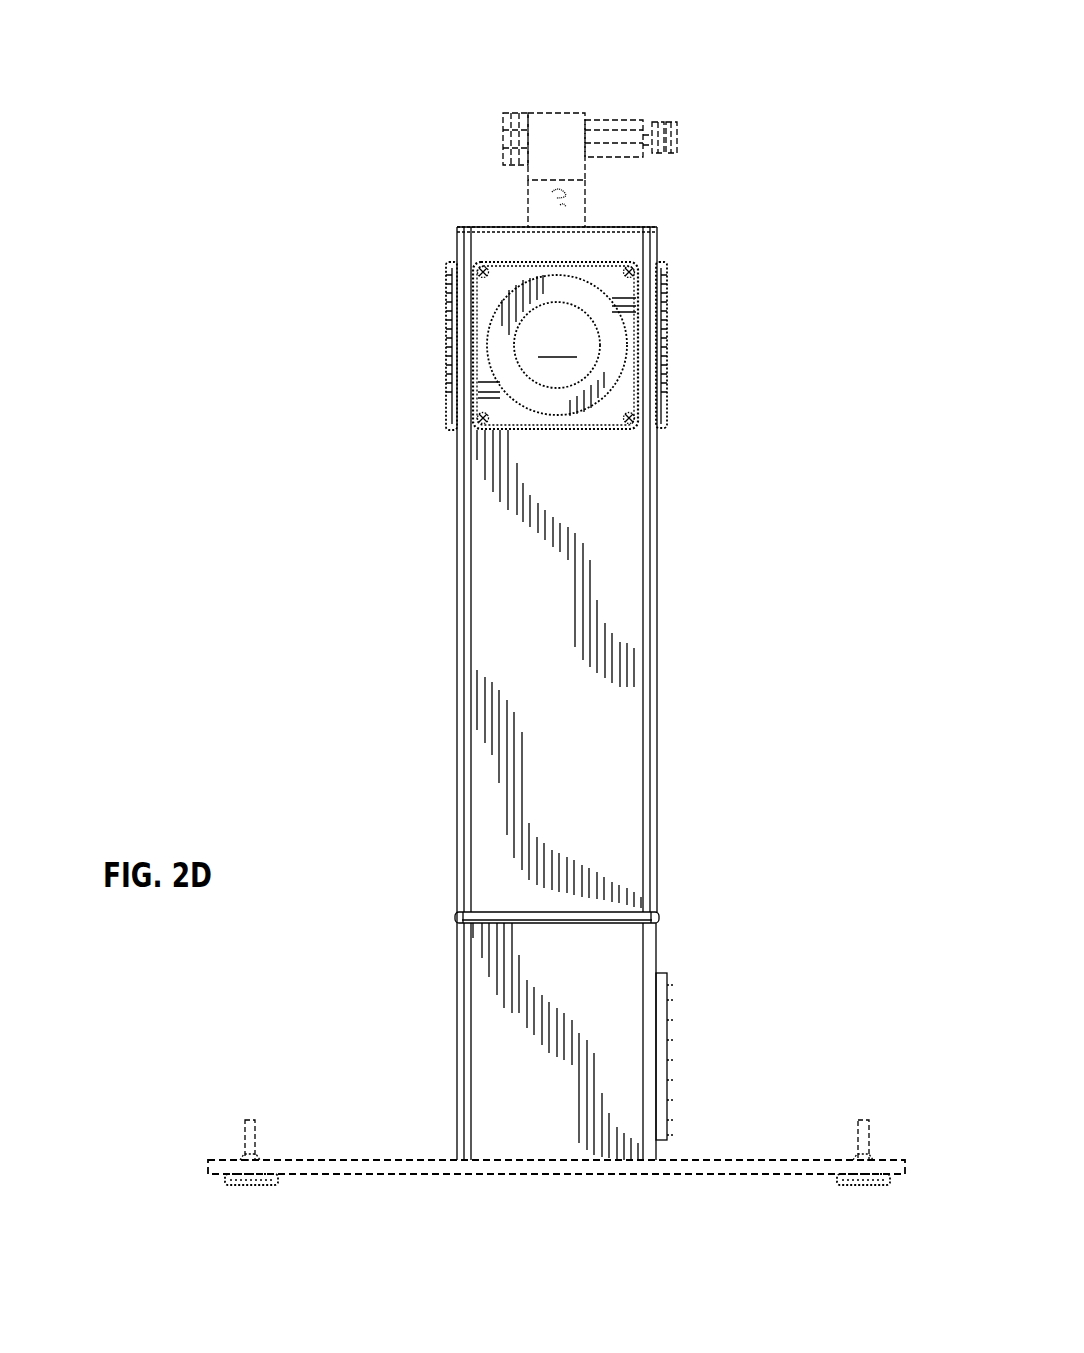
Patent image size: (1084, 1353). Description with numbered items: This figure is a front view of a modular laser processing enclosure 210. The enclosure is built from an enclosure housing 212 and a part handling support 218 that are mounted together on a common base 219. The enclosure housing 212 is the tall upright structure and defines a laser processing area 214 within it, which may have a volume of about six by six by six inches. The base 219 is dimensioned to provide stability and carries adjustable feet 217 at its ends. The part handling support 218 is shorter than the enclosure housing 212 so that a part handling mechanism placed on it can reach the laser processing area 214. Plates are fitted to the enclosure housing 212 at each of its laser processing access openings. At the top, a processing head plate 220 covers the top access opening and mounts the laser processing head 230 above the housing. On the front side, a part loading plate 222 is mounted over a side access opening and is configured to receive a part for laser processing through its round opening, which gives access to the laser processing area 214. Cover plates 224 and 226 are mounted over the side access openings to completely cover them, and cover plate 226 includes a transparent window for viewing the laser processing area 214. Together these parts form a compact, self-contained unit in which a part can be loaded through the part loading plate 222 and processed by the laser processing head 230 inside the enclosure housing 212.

The modular laser processing enclosure 210 is at (268, 470).
The enclosure housing 212 is at (658, 640).
The laser processing area 214 is at (557, 345).
The adjustable feet 217 is at (245, 1190).
The part handling support 218 is at (565, 908).
The base 219 is at (750, 1158).
The processing head plate 220 is at (618, 222).
The part loading plate 222 is at (525, 435).
The cover plate 224 is at (672, 372).
The cover plate 226 is at (443, 378).
The laser processing head 230 is at (585, 113).